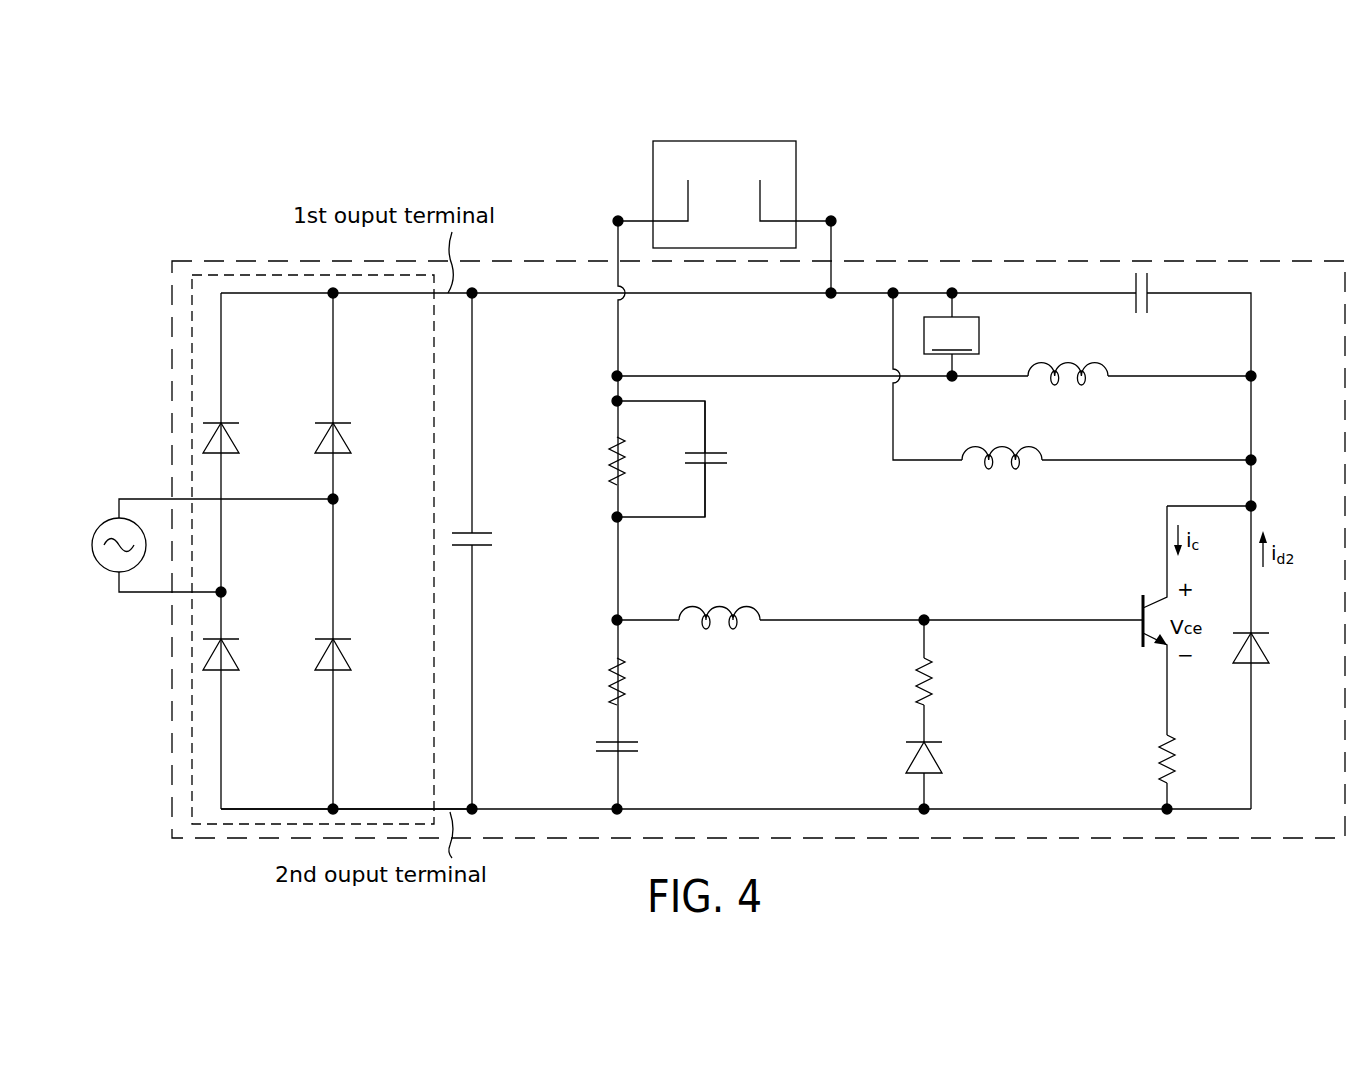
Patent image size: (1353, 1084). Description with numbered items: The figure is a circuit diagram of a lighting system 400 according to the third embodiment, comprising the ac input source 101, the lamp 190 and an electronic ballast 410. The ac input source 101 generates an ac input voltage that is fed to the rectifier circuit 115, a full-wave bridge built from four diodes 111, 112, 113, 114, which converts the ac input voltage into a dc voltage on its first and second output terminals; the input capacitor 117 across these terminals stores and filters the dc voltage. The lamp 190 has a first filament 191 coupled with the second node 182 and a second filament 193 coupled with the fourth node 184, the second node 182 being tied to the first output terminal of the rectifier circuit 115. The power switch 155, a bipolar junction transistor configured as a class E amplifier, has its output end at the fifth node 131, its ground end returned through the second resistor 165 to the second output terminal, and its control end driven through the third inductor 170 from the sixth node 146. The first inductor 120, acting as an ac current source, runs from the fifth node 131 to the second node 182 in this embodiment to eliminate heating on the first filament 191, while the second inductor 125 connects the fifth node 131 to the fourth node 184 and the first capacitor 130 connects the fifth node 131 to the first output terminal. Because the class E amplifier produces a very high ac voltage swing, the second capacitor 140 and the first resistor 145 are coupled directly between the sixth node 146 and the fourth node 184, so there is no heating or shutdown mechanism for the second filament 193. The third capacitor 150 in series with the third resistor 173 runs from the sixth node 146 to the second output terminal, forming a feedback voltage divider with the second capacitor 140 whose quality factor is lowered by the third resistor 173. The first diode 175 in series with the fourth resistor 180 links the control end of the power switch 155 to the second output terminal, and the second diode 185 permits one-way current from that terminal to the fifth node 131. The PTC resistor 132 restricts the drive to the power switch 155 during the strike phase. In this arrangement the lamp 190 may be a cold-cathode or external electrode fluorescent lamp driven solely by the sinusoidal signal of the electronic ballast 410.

The lighting system 400 is at (1183, 150).
The electronic ballast 410 is at (240, 260).
The ac input source 101 is at (100, 522).
The diode 111 is at (238, 441).
The diode 112 is at (350, 441).
The diode 113 is at (238, 657).
The diode 114 is at (350, 657).
The rectifier circuit 115 is at (192, 810).
The input capacitor 117 is at (494, 541).
The first inductor 120 is at (1004, 447).
The second inductor 125 is at (1070, 364).
The first capacitor 130 is at (1146, 315).
The fifth node 131 is at (1256, 503).
The positive temperature coefficient (PTC) resistor 132 is at (933, 334).
The second capacitor 140 is at (730, 459).
The first resistor 145 is at (605, 465).
The sixth node 146 is at (614, 617).
The third capacitor 150 is at (640, 747).
The power switch 155 is at (1142, 600).
The second resistor 165 is at (1155, 761).
The third inductor 170 is at (720, 607).
The third resistor 173 is at (605, 686).
The first diode 175 is at (909, 763).
The fourth resistor 180 is at (912, 686).
The second node 182 is at (837, 223).
The fourth node 184 is at (614, 221).
The second diode 185 is at (1265, 647).
The lamp 190 is at (745, 141).
The first filament 191 is at (751, 202).
The second filament 193 is at (697, 191).